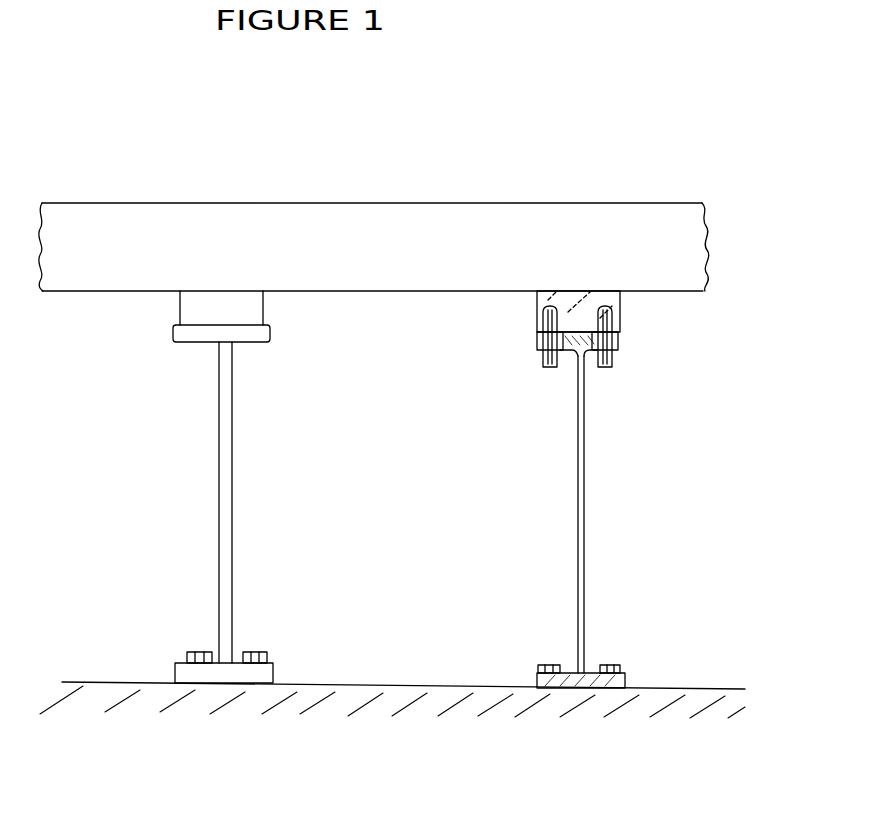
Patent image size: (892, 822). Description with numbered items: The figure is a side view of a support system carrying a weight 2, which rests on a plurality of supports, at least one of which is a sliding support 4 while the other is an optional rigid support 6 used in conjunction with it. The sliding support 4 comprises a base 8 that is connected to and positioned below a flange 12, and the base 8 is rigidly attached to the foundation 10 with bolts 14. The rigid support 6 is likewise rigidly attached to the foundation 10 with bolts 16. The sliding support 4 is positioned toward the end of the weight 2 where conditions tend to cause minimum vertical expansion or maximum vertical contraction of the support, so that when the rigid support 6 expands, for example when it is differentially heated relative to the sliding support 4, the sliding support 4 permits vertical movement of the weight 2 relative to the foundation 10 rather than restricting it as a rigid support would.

The weight 2 is at (587, 203).
The sliding support 4 is at (624, 492).
The rigid support 6 is at (260, 491).
The base 8 is at (625, 678).
The foundation 10 is at (725, 690).
The flange 12 is at (627, 340).
The bolts 14 is at (617, 672).
The bolts 16 is at (262, 660).